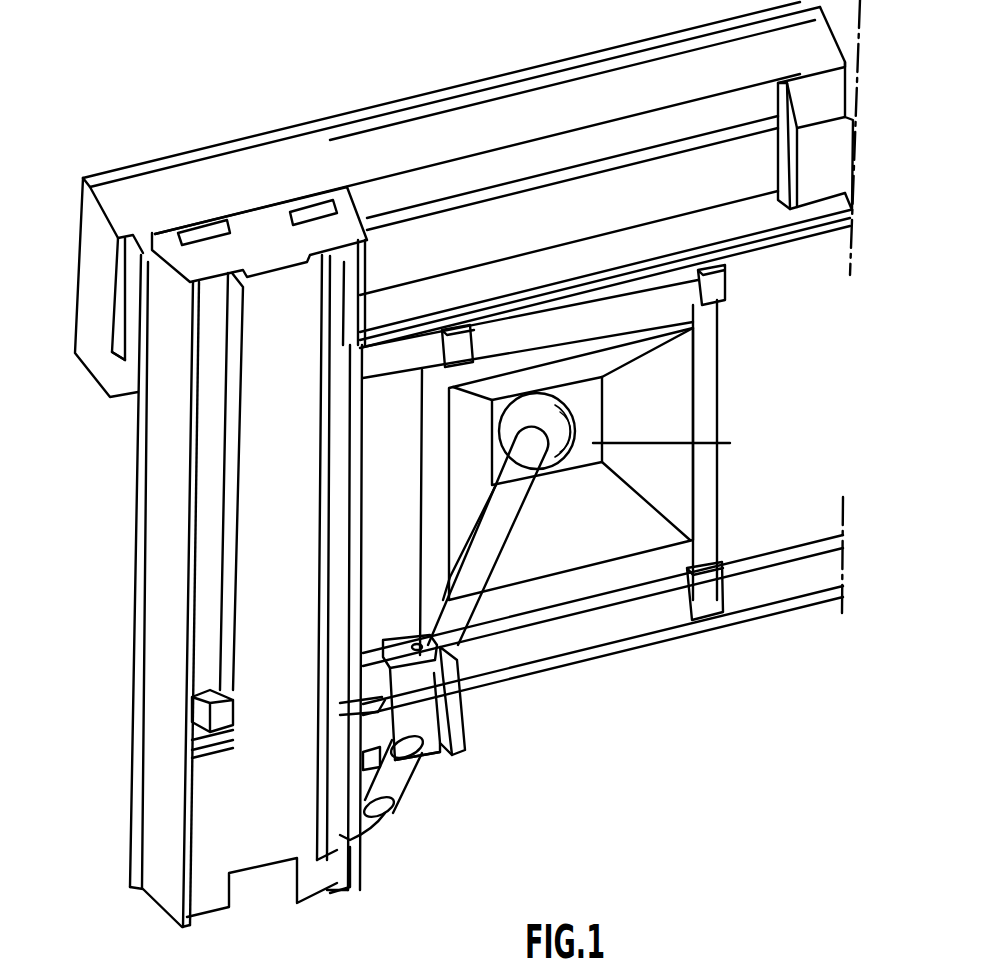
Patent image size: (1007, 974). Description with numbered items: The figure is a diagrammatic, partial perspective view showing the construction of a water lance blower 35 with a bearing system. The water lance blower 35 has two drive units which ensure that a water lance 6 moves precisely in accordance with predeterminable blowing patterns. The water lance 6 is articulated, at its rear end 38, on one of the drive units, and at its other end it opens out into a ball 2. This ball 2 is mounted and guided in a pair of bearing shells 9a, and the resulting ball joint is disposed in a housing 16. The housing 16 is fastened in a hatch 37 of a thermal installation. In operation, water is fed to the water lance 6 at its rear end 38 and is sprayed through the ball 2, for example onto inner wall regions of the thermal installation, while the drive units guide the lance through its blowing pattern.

The ball 2 is at (563, 412).
The water lance 6 is at (490, 568).
The bearing shell 9a is at (701, 444).
The housing 16 is at (622, 540).
The water lance blower 35 is at (108, 812).
The hatch 37 is at (740, 368).
The rear end 38 is at (407, 785).